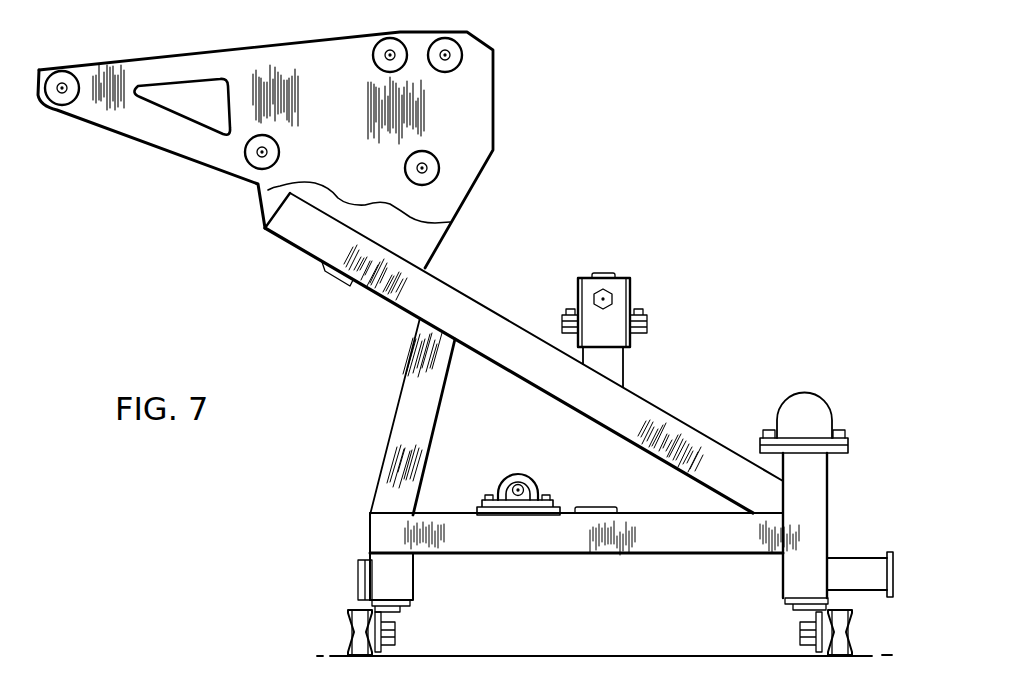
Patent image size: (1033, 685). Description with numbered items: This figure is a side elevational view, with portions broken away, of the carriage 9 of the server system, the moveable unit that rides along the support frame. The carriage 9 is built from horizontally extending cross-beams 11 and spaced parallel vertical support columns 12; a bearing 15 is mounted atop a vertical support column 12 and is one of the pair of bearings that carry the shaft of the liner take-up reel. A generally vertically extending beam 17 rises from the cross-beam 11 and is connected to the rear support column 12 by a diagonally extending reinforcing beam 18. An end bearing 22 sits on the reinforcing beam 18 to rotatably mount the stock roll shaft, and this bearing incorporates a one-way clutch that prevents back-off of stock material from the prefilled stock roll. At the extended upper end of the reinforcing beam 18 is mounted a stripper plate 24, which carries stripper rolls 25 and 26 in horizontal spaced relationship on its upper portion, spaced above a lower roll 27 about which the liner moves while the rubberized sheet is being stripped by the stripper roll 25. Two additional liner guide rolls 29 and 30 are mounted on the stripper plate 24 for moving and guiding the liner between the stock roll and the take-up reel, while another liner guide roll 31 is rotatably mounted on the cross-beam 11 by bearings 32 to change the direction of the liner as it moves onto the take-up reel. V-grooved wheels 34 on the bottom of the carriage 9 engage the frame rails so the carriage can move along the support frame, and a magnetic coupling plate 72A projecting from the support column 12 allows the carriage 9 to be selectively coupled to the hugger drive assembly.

The carriage 9 is at (712, 356).
The cross-beam 11 is at (670, 546).
The vertical support column 12 is at (806, 481).
The bearing 15 is at (818, 412).
The vertically extending beam 17 is at (404, 435).
The diagonally extending reinforcing beam 18 is at (501, 349).
The end bearing 22 is at (603, 272).
The stripper plate 24 is at (328, 119).
The stripper roll 25 is at (462, 57).
The stripper roll 26 is at (373, 51).
The lower roll 27 is at (434, 158).
The liner guide roll 29 is at (67, 104).
The liner guide roll 30 is at (249, 164).
The liner guide roll 31 is at (532, 480).
The bearing 32 is at (512, 506).
The V-grooved wheel 34 is at (348, 629).
The magnetic coupling plate 72A is at (882, 553).